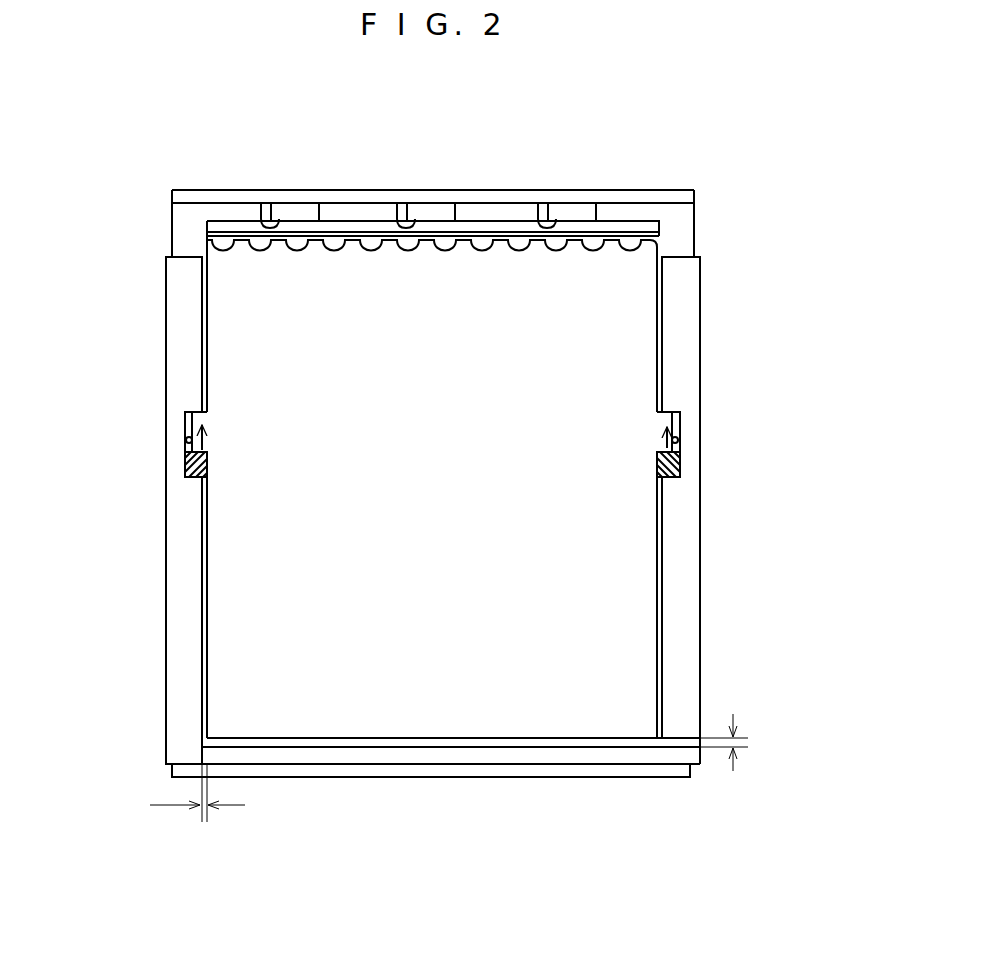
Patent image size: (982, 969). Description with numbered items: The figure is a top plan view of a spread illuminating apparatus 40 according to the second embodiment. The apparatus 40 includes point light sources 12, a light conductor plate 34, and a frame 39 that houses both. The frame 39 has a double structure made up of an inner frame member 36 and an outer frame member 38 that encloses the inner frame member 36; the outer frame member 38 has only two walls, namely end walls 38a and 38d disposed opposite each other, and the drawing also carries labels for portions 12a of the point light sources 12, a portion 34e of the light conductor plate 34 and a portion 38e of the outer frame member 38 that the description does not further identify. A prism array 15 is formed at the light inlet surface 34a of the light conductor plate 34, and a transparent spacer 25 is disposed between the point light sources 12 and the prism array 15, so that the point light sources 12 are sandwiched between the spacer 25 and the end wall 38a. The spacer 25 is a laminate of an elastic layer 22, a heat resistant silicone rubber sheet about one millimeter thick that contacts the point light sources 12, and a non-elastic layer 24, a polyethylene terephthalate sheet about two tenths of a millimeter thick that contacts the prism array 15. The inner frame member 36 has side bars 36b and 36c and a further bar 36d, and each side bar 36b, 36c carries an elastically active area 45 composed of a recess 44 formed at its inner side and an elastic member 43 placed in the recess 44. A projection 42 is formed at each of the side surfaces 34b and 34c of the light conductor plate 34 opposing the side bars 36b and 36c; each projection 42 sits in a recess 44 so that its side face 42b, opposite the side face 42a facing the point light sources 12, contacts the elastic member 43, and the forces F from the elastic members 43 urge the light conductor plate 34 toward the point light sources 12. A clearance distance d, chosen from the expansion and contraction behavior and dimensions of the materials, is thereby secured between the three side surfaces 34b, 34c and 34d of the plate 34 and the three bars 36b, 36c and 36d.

The point light source 12 is at (600, 152).
The terminal of light emitting element 12a is at (262, 203).
The prism array 15 is at (222, 248).
The elastic layer 22 is at (658, 228).
The non-elastic layer 24 is at (657, 238).
The transparent spacer 25 is at (797, 225).
The light conductor plate 34 is at (627, 610).
The light inlet surface 34a is at (278, 250).
The side surface 34b is at (212, 646).
The side surface 34c is at (647, 655).
The side surface 34d is at (326, 734).
The lower end of inner frame side wall 34e is at (643, 705).
The inner frame member 36 is at (692, 312).
The side bar 36b is at (178, 589).
The side bar 36c is at (677, 552).
The bar 36d is at (512, 760).
The outer frame member 38 is at (697, 248).
The end wall 38a is at (657, 196).
The end wall 38d is at (600, 777).
The side arm of outer frame 38e is at (190, 223).
The frame 39 is at (850, 315).
The spread illuminating apparatus 40 is at (436, 803).
The projection 42 is at (98, 408).
The side face 42a is at (103, 372).
The side face 42b is at (750, 520).
The elastic member 43 is at (745, 480).
The recess 44 is at (745, 443).
The elastically active area 45 is at (88, 502).